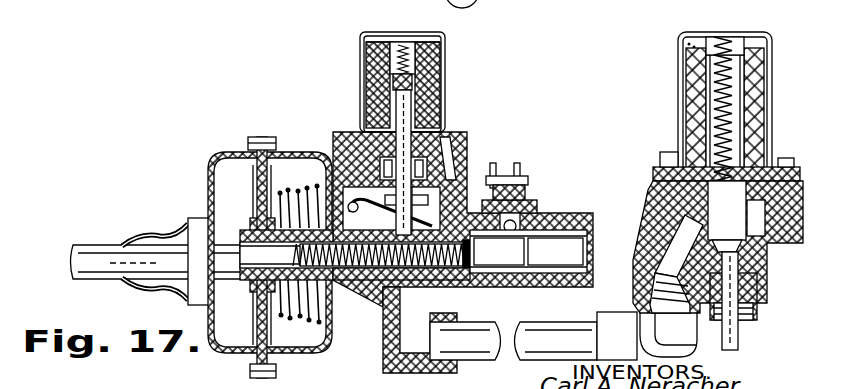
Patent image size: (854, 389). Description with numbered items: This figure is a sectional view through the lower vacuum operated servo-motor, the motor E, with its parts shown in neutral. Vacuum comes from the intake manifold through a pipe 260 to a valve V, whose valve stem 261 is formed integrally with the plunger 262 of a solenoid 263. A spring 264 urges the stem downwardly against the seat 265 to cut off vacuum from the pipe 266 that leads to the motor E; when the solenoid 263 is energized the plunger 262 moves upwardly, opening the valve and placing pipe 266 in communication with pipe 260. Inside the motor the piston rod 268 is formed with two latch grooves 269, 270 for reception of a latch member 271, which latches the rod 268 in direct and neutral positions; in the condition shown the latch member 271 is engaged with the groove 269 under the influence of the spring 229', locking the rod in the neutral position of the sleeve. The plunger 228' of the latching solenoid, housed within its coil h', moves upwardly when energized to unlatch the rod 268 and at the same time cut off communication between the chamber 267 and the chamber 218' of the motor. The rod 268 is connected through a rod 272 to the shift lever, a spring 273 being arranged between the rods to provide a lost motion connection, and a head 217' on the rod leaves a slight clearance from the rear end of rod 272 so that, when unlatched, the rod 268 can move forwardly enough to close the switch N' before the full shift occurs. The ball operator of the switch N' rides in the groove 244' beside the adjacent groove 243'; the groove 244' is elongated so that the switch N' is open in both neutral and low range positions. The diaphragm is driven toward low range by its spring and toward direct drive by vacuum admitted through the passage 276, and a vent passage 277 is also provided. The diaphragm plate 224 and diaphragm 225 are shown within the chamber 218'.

The rod 272 is at (104, 258).
The diaphragm plate 224 is at (256, 170).
The diaphragm 225 is at (258, 207).
The head 217' is at (252, 257).
The spring 273 is at (299, 200).
The chamber 218' is at (270, 265).
The passage 276 is at (356, 150).
The latch member 271 is at (370, 199).
The latch groove 270 is at (368, 283).
The latch groove 269 is at (394, 322).
The spring 229' is at (391, 39).
The solenoid coil h' is at (382, 82).
The plunger 228' is at (361, 154).
The motor E is at (446, 107).
The vent passage 277 is at (452, 151).
The chamber 267 is at (484, 190).
The switch N' is at (522, 193).
The piston rod 268 is at (556, 228).
The piston 243' is at (499, 251).
The groove 244' is at (555, 251).
The pipe 266 is at (555, 331).
The valve stem 261 is at (705, 228).
The valve V is at (650, 193).
The spring 264 is at (727, 37).
The solenoid 263 is at (688, 55).
The plunger 262 is at (701, 98).
The seat 265 is at (758, 270).
The pipe 260 is at (746, 334).